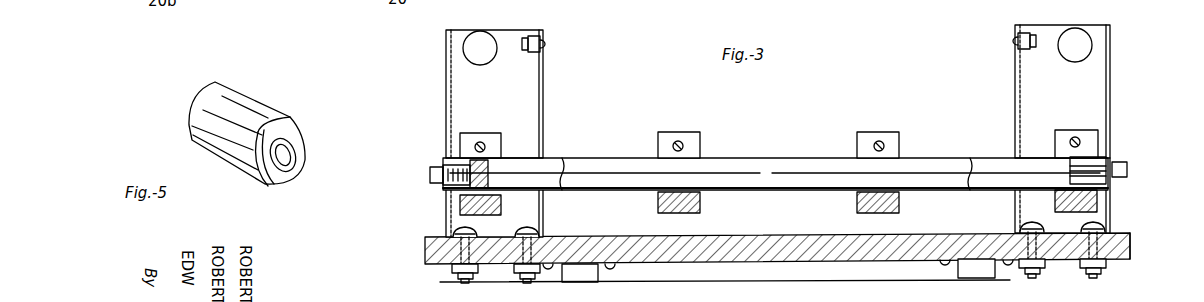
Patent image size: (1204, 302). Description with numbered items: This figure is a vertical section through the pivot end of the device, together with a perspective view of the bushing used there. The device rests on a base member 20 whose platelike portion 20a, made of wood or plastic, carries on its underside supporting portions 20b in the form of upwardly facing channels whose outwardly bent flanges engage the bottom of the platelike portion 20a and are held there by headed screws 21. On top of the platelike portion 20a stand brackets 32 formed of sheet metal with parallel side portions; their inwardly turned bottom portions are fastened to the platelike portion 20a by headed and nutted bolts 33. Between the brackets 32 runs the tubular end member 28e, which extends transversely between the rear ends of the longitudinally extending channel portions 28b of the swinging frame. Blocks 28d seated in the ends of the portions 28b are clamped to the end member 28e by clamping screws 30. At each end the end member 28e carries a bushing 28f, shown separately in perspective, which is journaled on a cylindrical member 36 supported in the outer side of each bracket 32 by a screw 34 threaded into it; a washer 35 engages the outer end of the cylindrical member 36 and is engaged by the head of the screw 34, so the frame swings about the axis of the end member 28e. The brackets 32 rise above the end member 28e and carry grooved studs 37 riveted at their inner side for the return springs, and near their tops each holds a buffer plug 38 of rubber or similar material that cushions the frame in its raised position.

In FIG. 3, the base member 20 is at (426, 250).
In FIG. 3, the platelike portion 20a is at (1126, 232).
In FIG. 3, the supporting portions 20b is at (600, 279).
In FIG. 3, the headed screws 21 is at (602, 268).
In FIG. 3, the longitudinally extending portions 28b is at (725, 291).
In FIG. 3, the blocks 28d is at (461, 140).
In FIG. 3, the end member 28e is at (762, 163).
In FIG. 3, the bushing 28f is at (512, 158).
In FIG. 3, the clamping screws 30 is at (480, 142).
In FIG. 3, the brackets 32 is at (545, 74).
In FIG. 3, the headed and nutted bolts 33 is at (452, 232).
In FIG. 3, the screw 34 is at (429, 174).
In FIG. 3, the washer 35 is at (445, 184).
In FIG. 3, the cylindrical member 36 is at (489, 172).
In FIG. 5, the cylindrical member 36 is at (270, 118).
In FIG. 3, the grooved studs 37 is at (534, 36).
In FIG. 3, the buffer plug 38 is at (480, 42).